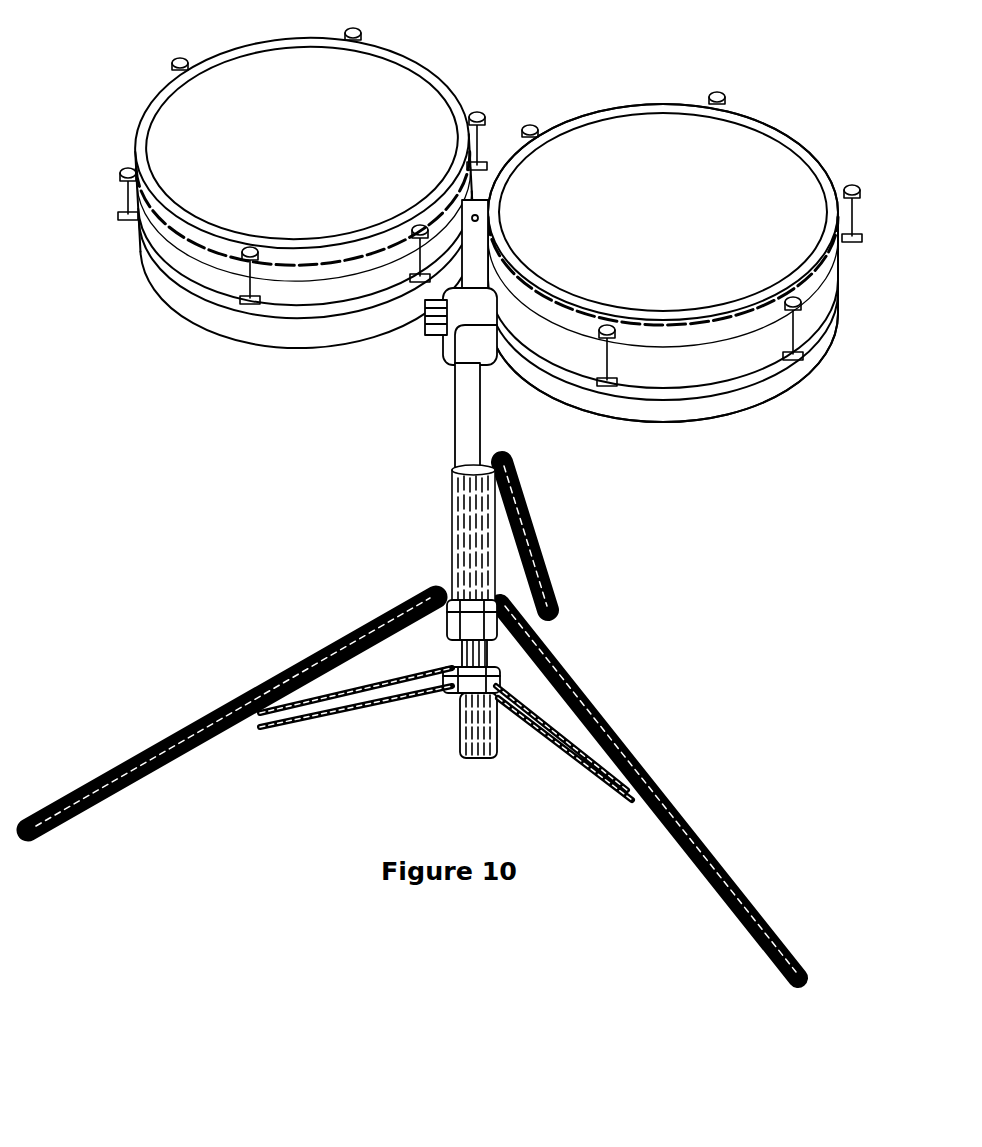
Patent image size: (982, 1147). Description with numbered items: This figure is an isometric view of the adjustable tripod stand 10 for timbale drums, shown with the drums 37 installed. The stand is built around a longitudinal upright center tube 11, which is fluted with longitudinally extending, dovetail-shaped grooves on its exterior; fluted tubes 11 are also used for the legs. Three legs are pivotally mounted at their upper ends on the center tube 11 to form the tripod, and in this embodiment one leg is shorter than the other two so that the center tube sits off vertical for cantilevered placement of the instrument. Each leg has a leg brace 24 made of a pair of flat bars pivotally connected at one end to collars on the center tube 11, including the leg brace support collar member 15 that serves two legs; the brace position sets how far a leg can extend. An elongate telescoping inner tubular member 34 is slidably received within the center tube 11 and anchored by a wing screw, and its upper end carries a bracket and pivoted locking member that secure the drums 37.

The adjustable tripod stand 10 is at (420, 589).
The longitudinal upright center tube 11 is at (452, 542).
The leg brace support collar member 15 is at (395, 610).
The leg brace 24 is at (303, 722).
The telescoping inner tubular member 34 is at (470, 423).
The drums 37 is at (153, 110).